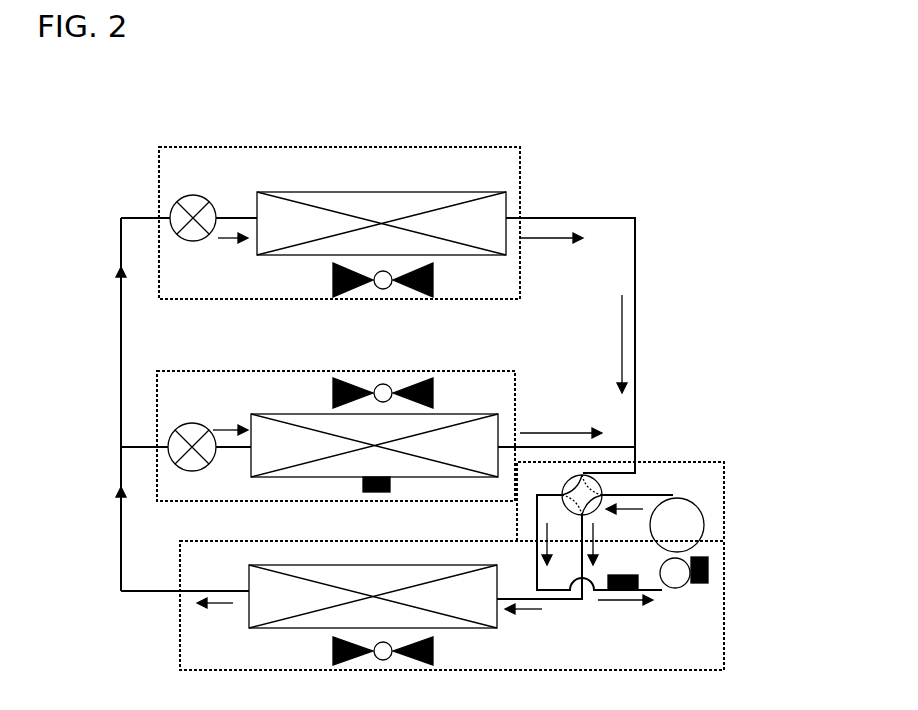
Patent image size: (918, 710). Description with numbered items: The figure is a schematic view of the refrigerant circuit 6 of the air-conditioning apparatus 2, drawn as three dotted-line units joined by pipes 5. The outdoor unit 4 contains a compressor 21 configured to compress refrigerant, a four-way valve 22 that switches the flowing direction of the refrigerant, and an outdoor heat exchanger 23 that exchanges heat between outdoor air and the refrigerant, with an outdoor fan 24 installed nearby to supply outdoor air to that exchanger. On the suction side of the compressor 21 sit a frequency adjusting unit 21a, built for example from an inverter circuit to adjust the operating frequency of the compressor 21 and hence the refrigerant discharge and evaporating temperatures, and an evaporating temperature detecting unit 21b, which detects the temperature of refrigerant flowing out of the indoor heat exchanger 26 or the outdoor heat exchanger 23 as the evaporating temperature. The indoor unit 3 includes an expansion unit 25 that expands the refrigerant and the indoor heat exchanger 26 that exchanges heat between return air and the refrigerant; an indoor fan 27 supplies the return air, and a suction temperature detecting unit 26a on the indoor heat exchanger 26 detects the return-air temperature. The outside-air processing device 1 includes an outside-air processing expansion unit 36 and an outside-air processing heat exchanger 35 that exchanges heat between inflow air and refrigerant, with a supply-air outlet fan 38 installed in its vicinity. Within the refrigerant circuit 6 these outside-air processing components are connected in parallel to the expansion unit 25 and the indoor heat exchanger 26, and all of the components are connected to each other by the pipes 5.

The outside-air processing device 1 is at (160, 170).
The air-conditioning apparatus 2 is at (715, 180).
The indoor unit 3 is at (157, 395).
The outdoor unit 4 is at (180, 563).
The pipes 5 is at (637, 356).
The refrigerant circuit 6 is at (652, 272).
The compressor 21 is at (700, 512).
The frequency adjusting unit 21a is at (708, 568).
The evaporating temperature detecting unit 21b is at (627, 592).
The four-way valve 22 is at (594, 476).
The outdoor heat exchanger 23 is at (490, 628).
The outdoor fan 24 is at (330, 650).
The expansion unit 25 is at (165, 460).
The indoor heat exchanger 26 is at (490, 470).
The suction temperature detecting unit 26a is at (378, 492).
The indoor fan 27 is at (333, 390).
The outside-air processing heat exchanger 35 is at (490, 248).
The outside-air processing expansion unit 36 is at (180, 208).
The supply-air outlet fan 38 is at (334, 276).